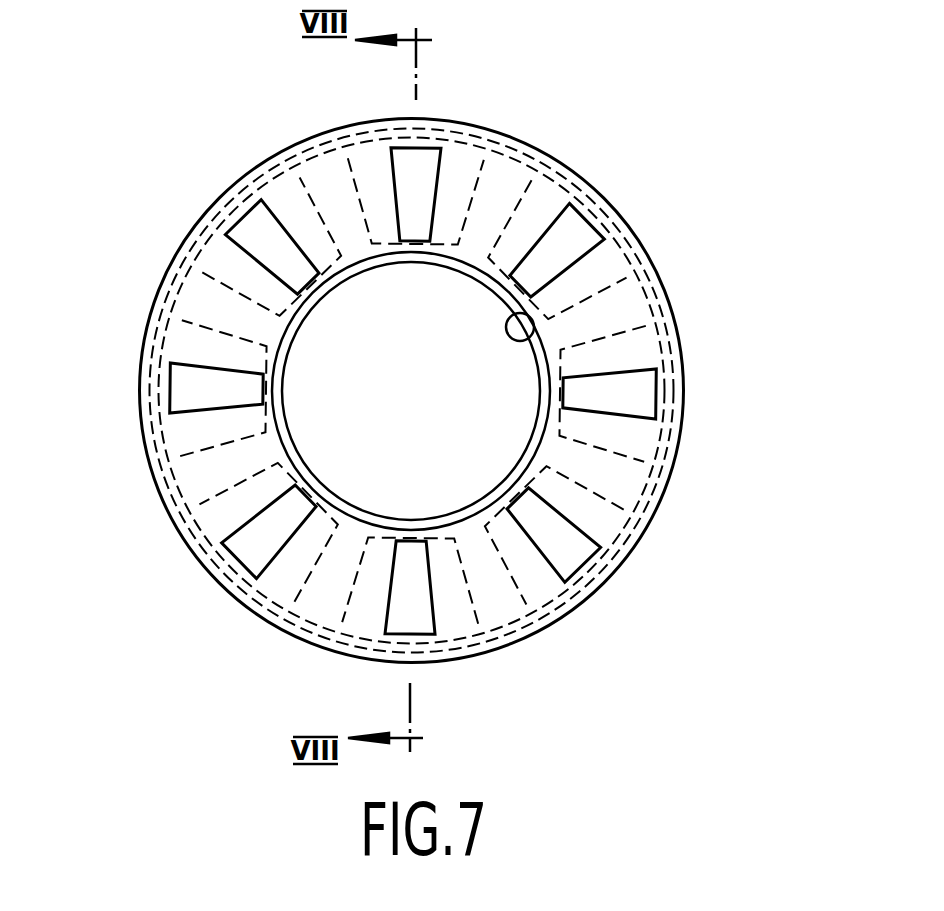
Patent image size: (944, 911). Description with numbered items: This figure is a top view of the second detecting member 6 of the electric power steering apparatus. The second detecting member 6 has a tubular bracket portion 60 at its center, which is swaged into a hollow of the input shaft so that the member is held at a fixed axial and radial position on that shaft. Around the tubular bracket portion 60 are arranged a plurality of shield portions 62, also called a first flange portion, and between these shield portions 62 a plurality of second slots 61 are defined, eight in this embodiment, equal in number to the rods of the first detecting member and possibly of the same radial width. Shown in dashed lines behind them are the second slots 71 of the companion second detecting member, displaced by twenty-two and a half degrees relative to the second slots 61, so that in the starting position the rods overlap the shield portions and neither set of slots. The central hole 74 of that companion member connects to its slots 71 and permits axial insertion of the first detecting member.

The second detecting member 6 is at (557, 193).
The tubular bracket portion 60 is at (516, 310).
The second slots 61 is at (427, 157).
The shield portions 62 is at (374, 168).
The second slots 71 is at (333, 178).
The hole 74 is at (350, 282).